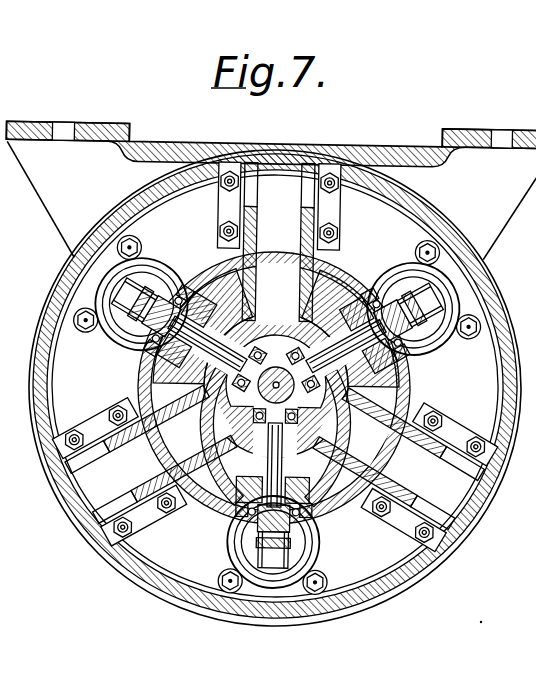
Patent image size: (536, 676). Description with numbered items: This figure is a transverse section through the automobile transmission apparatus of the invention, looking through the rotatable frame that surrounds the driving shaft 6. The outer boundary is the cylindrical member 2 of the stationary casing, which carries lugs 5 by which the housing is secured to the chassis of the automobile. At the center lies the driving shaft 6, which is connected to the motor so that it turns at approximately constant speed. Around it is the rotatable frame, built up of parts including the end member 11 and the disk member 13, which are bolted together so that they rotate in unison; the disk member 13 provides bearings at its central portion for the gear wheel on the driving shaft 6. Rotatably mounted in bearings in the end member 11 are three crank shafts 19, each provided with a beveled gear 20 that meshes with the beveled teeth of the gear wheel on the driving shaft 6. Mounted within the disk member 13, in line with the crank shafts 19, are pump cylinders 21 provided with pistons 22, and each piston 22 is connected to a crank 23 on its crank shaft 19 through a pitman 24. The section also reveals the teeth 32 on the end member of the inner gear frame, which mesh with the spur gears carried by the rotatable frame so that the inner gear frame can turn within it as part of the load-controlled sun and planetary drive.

The cylindrical member 2 is at (132, 203).
The lugs 5 is at (80, 126).
The driving shaft 6 is at (265, 392).
The end member 11 is at (332, 212).
The disk member 13 is at (277, 344).
The crank shafts 19 is at (178, 357).
The beveled gear 20 is at (202, 308).
The pump cylinders 21 is at (96, 326).
The pistons 22 is at (106, 342).
The cranks 23 is at (160, 291).
The pitmen 24 is at (130, 320).
The teeth 32 is at (293, 394).